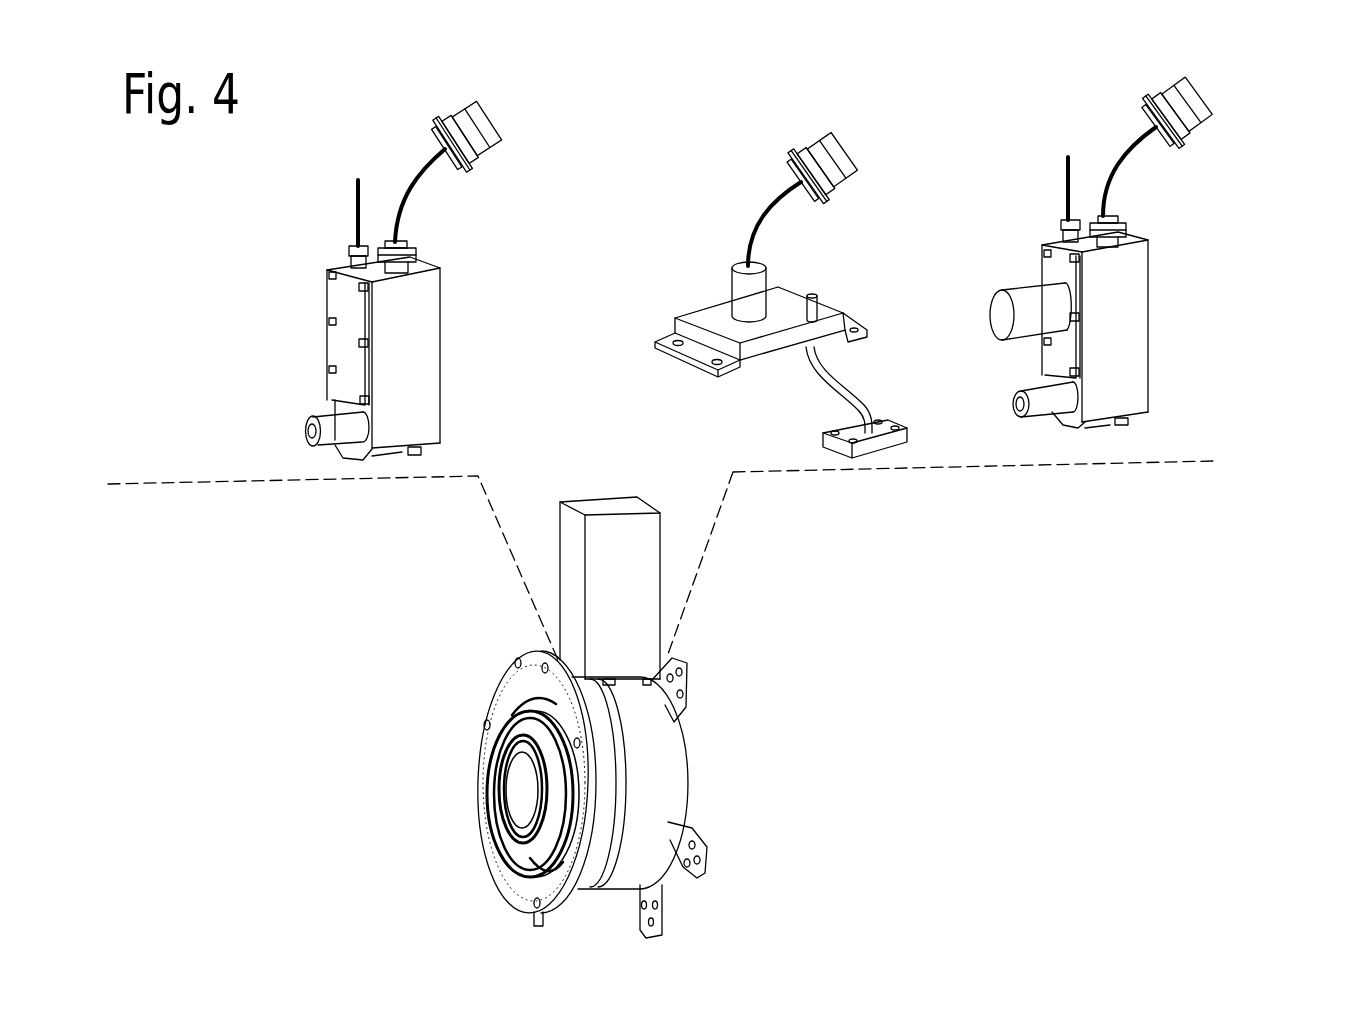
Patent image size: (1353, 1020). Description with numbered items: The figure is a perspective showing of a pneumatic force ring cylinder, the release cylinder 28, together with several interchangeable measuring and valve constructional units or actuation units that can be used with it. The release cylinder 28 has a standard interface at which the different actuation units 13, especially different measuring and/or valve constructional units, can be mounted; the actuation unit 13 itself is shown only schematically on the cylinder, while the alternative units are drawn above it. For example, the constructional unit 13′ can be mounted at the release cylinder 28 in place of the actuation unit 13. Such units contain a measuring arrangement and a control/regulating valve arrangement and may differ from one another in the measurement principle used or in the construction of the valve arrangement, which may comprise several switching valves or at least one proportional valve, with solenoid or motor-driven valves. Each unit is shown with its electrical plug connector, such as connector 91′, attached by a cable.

The actuation unit 13 is at (640, 618).
The constructional unit 13′ is at (348, 358).
The release cylinder 28 is at (655, 773).
The plug connector 91′ is at (498, 140).